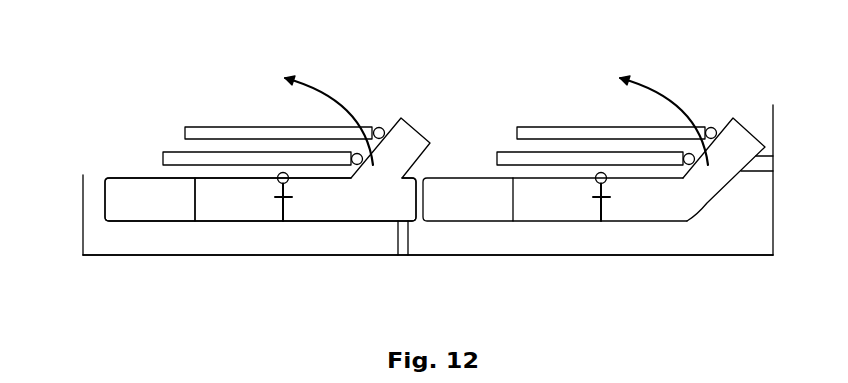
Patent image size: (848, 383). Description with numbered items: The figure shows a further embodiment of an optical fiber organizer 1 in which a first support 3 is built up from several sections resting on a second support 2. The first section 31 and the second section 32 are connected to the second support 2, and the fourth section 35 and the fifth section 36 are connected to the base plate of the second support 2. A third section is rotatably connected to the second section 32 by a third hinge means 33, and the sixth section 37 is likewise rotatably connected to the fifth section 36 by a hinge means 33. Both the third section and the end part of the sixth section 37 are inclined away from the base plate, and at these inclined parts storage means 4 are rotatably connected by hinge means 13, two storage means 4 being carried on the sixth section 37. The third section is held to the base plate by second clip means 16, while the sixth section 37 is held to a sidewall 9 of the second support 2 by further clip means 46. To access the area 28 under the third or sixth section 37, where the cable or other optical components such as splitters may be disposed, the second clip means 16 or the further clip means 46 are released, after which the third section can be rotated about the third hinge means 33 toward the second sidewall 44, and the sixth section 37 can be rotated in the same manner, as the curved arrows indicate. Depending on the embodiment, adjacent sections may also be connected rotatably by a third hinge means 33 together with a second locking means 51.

The optical fiber organizer 1 is at (489, 75).
The second support 2 is at (268, 257).
The first support 3 is at (100, 207).
The storage means 4 is at (191, 116).
The sidewall 9 is at (775, 210).
The hinge means 13 is at (379, 127).
The second clip means 16 is at (402, 237).
The area 28 is at (366, 240).
The first section 31 is at (152, 203).
The second section 32 is at (230, 203).
The third hinge means 33 is at (280, 173).
The fourth section 35 is at (480, 203).
The fifth section 36 is at (545, 202).
The sixth section 37 is at (690, 203).
The second sidewall 44 is at (82, 180).
The further clip means 46 is at (765, 164).
The second locking means 51 is at (290, 203).